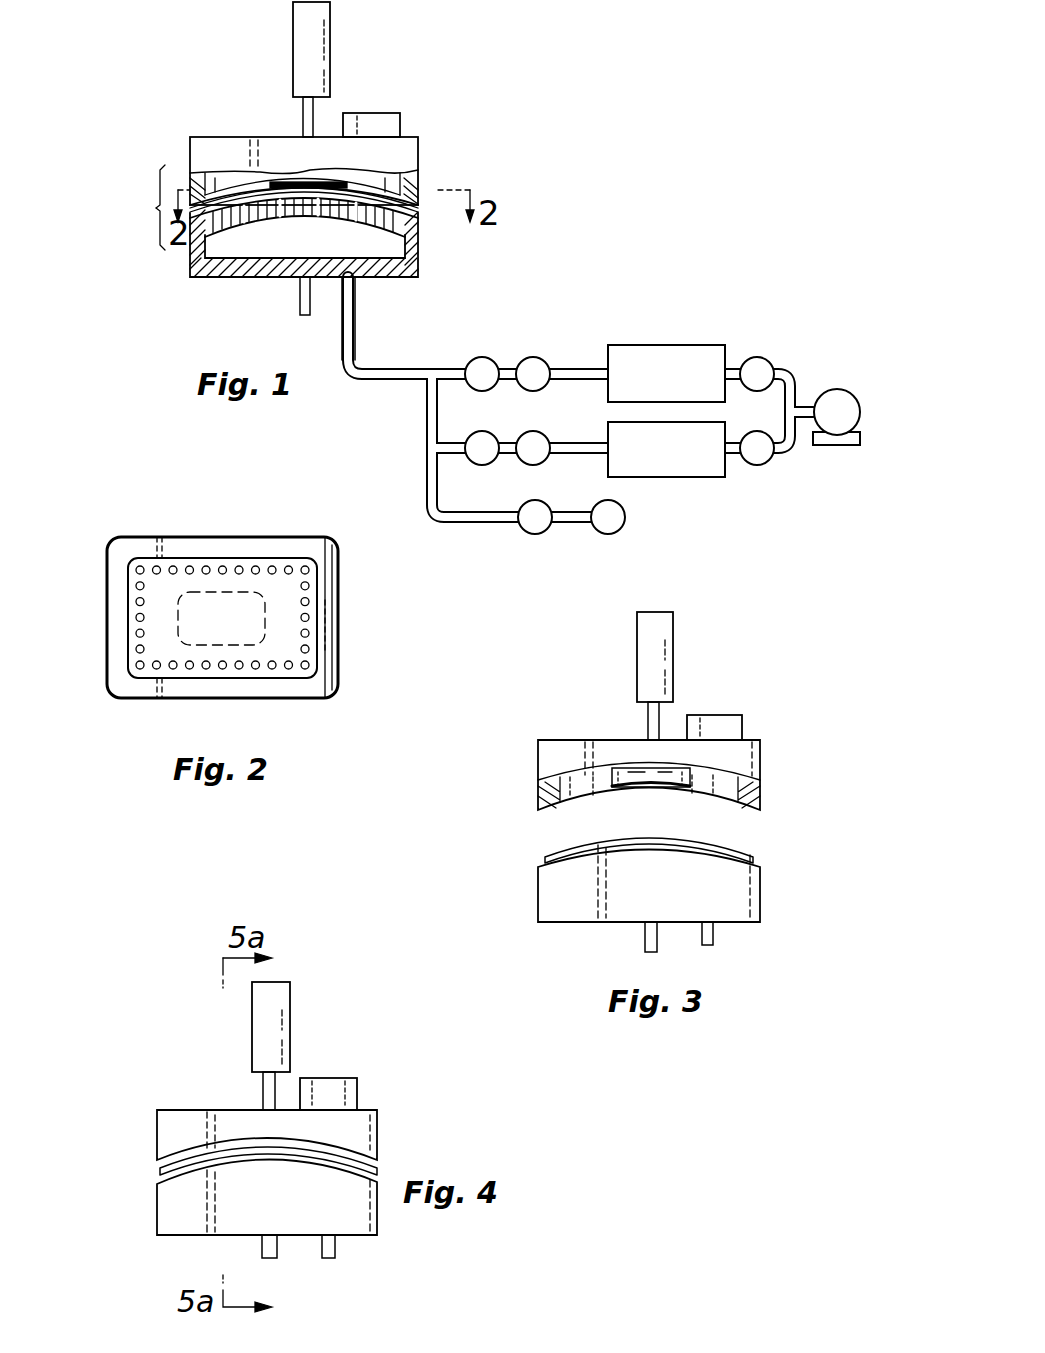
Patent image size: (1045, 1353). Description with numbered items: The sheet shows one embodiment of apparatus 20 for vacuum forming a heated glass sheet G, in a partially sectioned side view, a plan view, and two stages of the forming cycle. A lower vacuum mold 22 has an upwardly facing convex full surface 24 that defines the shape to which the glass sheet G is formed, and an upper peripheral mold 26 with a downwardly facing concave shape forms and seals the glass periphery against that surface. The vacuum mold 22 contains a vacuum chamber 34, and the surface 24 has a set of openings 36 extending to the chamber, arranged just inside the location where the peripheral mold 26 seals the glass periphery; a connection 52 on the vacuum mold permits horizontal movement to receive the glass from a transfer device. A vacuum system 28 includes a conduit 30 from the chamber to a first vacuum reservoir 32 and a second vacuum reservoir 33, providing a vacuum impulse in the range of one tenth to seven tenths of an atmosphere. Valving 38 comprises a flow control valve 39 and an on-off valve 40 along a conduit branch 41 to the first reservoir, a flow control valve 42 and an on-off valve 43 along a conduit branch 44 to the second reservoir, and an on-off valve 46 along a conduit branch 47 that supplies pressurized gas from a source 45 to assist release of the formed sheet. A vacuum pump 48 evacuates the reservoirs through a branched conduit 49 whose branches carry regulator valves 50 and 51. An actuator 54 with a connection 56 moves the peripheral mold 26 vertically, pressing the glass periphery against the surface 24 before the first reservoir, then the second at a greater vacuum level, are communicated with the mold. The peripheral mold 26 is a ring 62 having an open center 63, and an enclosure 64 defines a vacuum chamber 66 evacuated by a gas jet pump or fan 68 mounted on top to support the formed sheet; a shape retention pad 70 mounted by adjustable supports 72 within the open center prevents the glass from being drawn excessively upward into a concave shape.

In FIG. 1, the apparatus 20 is at (499, 90).
In FIG. 2, the apparatus 20 is at (338, 537).
In FIG. 3, the apparatus 20 is at (786, 730).
In FIG. 4, the apparatus 20 is at (396, 1078).
In FIG. 1, the vacuum mold 22 is at (422, 248).
In FIG. 2, the vacuum mold 22 is at (281, 567).
In FIG. 3, the vacuum mold 22 is at (762, 905).
In FIG. 4, the vacuum mold 22 is at (155, 1220).
In FIG. 1, the surface 24 is at (196, 230).
In FIG. 2, the surface 24 is at (176, 568).
In FIG. 3, the surface 24 is at (672, 840).
In FIG. 4, the surface 24 is at (297, 1150).
In FIG. 1, the peripheral mold 26 is at (420, 147).
In FIG. 2, the peripheral mold 26 is at (335, 558).
In FIG. 3, the peripheral mold 26 is at (762, 758).
In FIG. 4, the peripheral mold 26 is at (380, 1122).
In FIG. 1, the vacuum system 28 is at (519, 328).
In FIG. 1, the conduit 30 is at (356, 300).
In FIG. 3, the conduit 30 is at (715, 935).
In FIG. 4, the conduit 30 is at (337, 1244).
In FIG. 1, the first vacuum reservoir 32 is at (662, 345).
In FIG. 1, the second vacuum reservoir 33 is at (680, 478).
In FIG. 1, the vacuum chamber 34 is at (398, 252).
In FIG. 1, the openings 36 is at (286, 210).
In FIG. 2, the openings 36 is at (253, 670).
In FIG. 1, the valving 38 is at (483, 353).
In FIG. 1, the flow control valve 39 is at (500, 360).
In FIG. 1, the on-off valve 40 is at (548, 362).
In FIG. 1, the conduit branch 41 is at (583, 368).
In FIG. 1, the flow control valve 42 is at (490, 432).
In FIG. 1, the on-off valve 43 is at (542, 432).
In FIG. 1, the conduit branch 44 is at (575, 442).
In FIG. 1, the pressurized gas source 45 is at (622, 527).
In FIG. 1, the on-off valve 46 is at (535, 535).
In FIG. 1, the conduit branch 47 is at (462, 522).
In FIG. 1, the vacuum pump 48 is at (847, 392).
In FIG. 1, the branched conduit 49 is at (803, 405).
In FIG. 1, the regulator valve 50 is at (757, 357).
In FIG. 1, the regulator valve 51 is at (760, 466).
In FIG. 1, the connection 52 is at (302, 300).
In FIG. 3, the connection 52 is at (645, 940).
In FIG. 4, the connection 52 is at (262, 1248).
In FIG. 1, the actuator 54 is at (327, 27).
In FIG. 3, the actuator 54 is at (675, 648).
In FIG. 4, the actuator 54 is at (292, 1008).
In FIG. 1, the connection 56 is at (316, 108).
In FIG. 3, the connection 56 is at (662, 718).
In FIG. 4, the connection 56 is at (277, 1085).
In FIG. 2, the ring 62 is at (330, 596).
In FIG. 3, the ring 62 is at (550, 806).
In FIG. 2, the open center 63 is at (310, 650).
In FIG. 3, the open center 63 is at (715, 782).
In FIG. 1, the enclosure 64 is at (323, 146).
In FIG. 3, the enclosure 64 is at (566, 762).
In FIG. 4, the enclosure 64 is at (182, 1115).
In FIG. 1, the vacuum chamber 66 is at (420, 178).
In FIG. 3, the vacuum chamber 66 is at (762, 784).
In FIG. 1, the gas jet pump or fan 68 is at (386, 120).
In FIG. 3, the gas jet pump or fan 68 is at (712, 718).
In FIG. 4, the gas jet pump or fan 68 is at (345, 1080).
In FIG. 1, the shape retention pad 70 is at (306, 178).
In FIG. 3, the shape retention pad 70 is at (640, 766).
In FIG. 2, the adjustable supports 72 is at (204, 592).
In FIG. 3, the adjustable supports 72 is at (636, 770).
In FIG. 1, the glass sheet G is at (418, 211).
In FIG. 3, the glass sheet G is at (755, 857).
In FIG. 4, the glass sheet G is at (160, 1170).